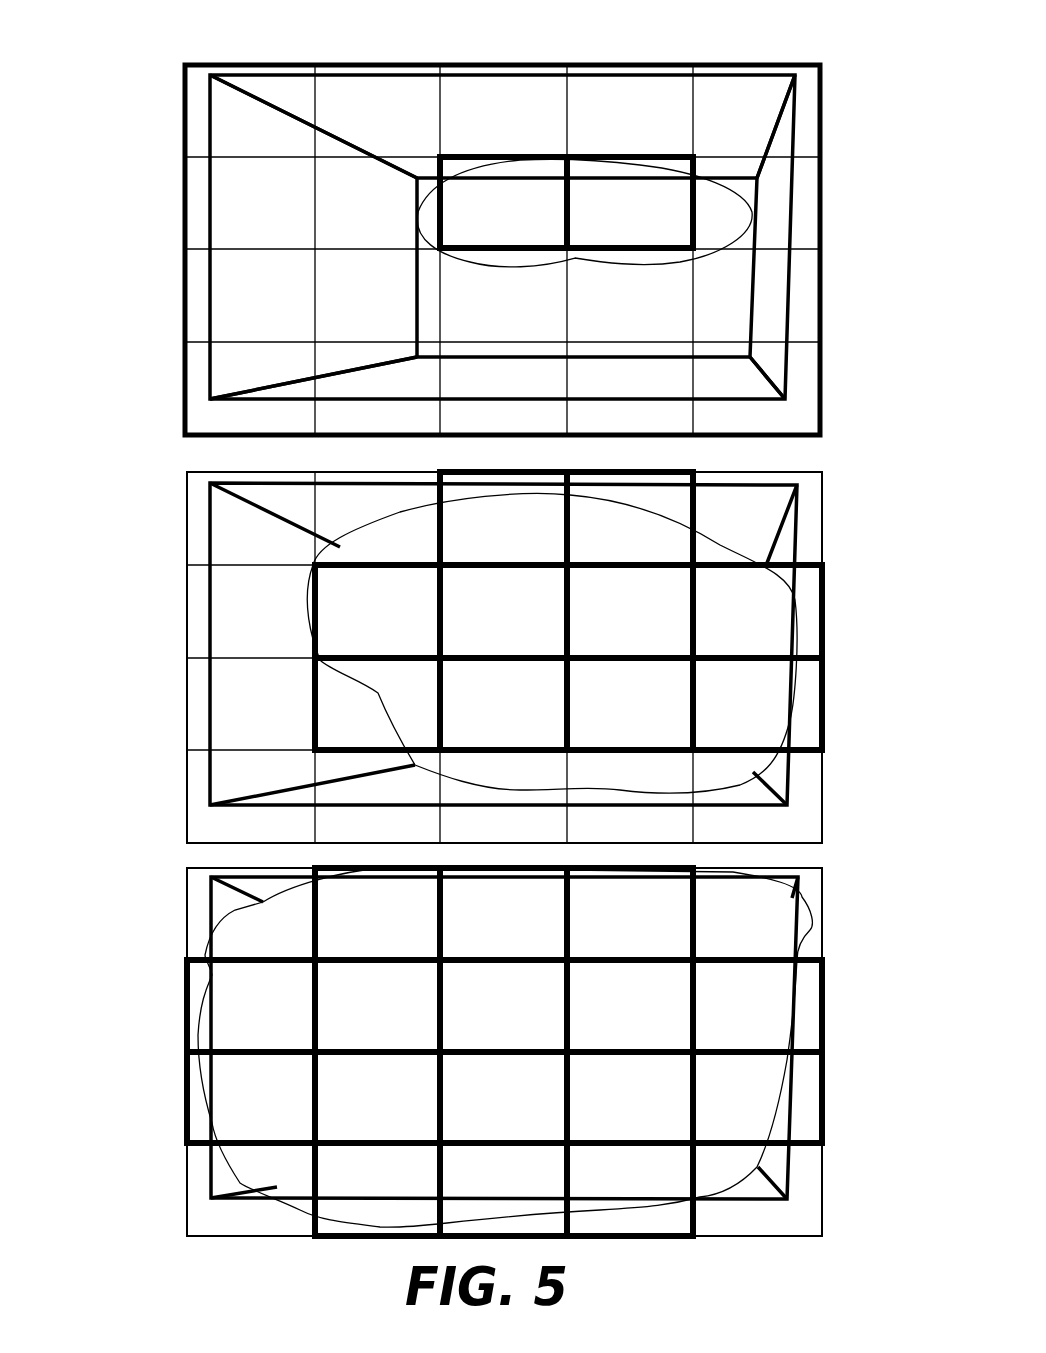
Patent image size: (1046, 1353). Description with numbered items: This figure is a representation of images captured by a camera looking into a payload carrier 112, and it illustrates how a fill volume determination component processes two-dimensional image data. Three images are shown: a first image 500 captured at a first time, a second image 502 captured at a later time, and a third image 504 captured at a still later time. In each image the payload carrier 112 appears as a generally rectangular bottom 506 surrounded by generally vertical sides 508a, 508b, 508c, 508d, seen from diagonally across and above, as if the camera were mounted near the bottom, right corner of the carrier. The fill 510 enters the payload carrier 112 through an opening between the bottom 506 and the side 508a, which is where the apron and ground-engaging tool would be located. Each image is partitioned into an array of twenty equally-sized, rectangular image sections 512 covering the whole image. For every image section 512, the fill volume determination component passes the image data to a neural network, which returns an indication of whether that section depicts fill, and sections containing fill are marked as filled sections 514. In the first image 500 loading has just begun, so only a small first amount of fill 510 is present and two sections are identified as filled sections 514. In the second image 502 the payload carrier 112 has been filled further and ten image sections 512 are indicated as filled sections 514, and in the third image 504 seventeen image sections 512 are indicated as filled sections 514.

The first image 500 is at (150, 43).
The second image 502 is at (150, 477).
The third image 504 is at (150, 881).
The bottom 506 is at (717, 273).
The side 508a is at (647, 100).
The side 508b is at (770, 333).
The side 508c is at (730, 380).
The side 508d is at (257, 233).
The fill 510 is at (717, 183).
The payload carrier 112 is at (770, 302).
The image sections 512 is at (503, 650).
The filled sections 514 is at (527, 157).